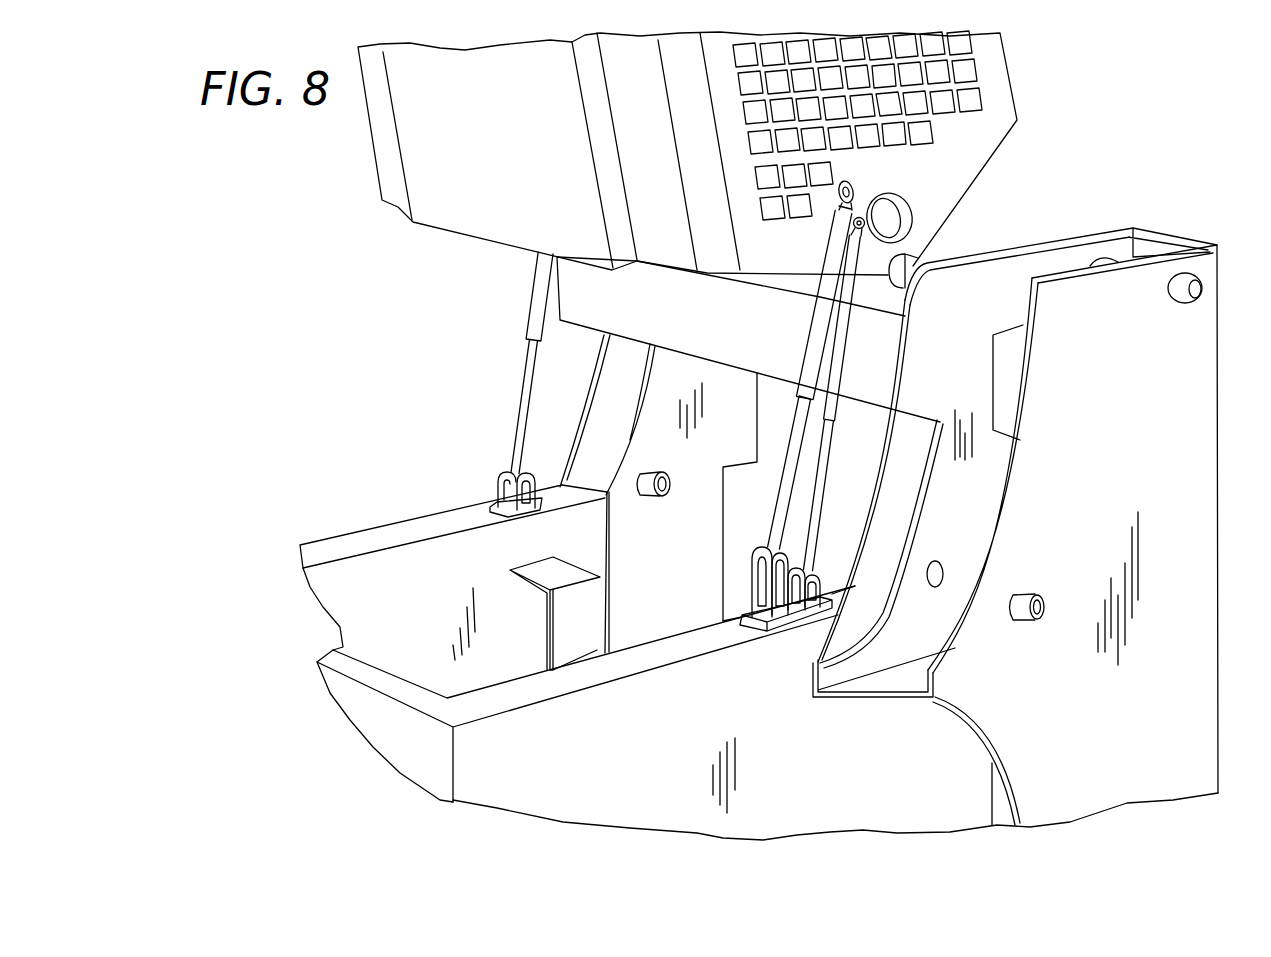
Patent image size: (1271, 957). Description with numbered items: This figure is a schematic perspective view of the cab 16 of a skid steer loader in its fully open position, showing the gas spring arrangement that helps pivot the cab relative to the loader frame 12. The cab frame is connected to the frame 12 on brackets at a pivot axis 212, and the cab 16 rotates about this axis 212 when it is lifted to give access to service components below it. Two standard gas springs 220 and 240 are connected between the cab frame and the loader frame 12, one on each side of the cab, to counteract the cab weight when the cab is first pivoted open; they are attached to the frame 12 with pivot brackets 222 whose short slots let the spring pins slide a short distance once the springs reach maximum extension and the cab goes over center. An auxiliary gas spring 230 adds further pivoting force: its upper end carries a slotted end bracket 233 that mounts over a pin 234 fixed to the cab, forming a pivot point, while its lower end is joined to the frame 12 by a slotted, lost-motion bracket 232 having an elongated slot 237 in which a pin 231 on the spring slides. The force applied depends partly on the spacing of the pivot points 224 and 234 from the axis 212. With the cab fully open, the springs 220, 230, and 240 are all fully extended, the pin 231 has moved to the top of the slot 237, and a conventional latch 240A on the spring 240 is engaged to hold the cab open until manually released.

The frame 12 is at (836, 771).
The cab 16 is at (1012, 139).
The pivot axis 212 is at (923, 260).
The gas spring 220 is at (880, 370).
The pivot bracket 222 is at (850, 580).
The pivot point 224 is at (862, 197).
The auxiliary gas spring 230 is at (797, 346).
The pin 231 is at (790, 554).
The bracket 232 is at (757, 572).
The slotted end bracket 233 is at (852, 181).
The pin 234 is at (845, 188).
The elongated slot 237 is at (767, 634).
The gas spring 240 is at (535, 420).
The latch 240A is at (510, 443).